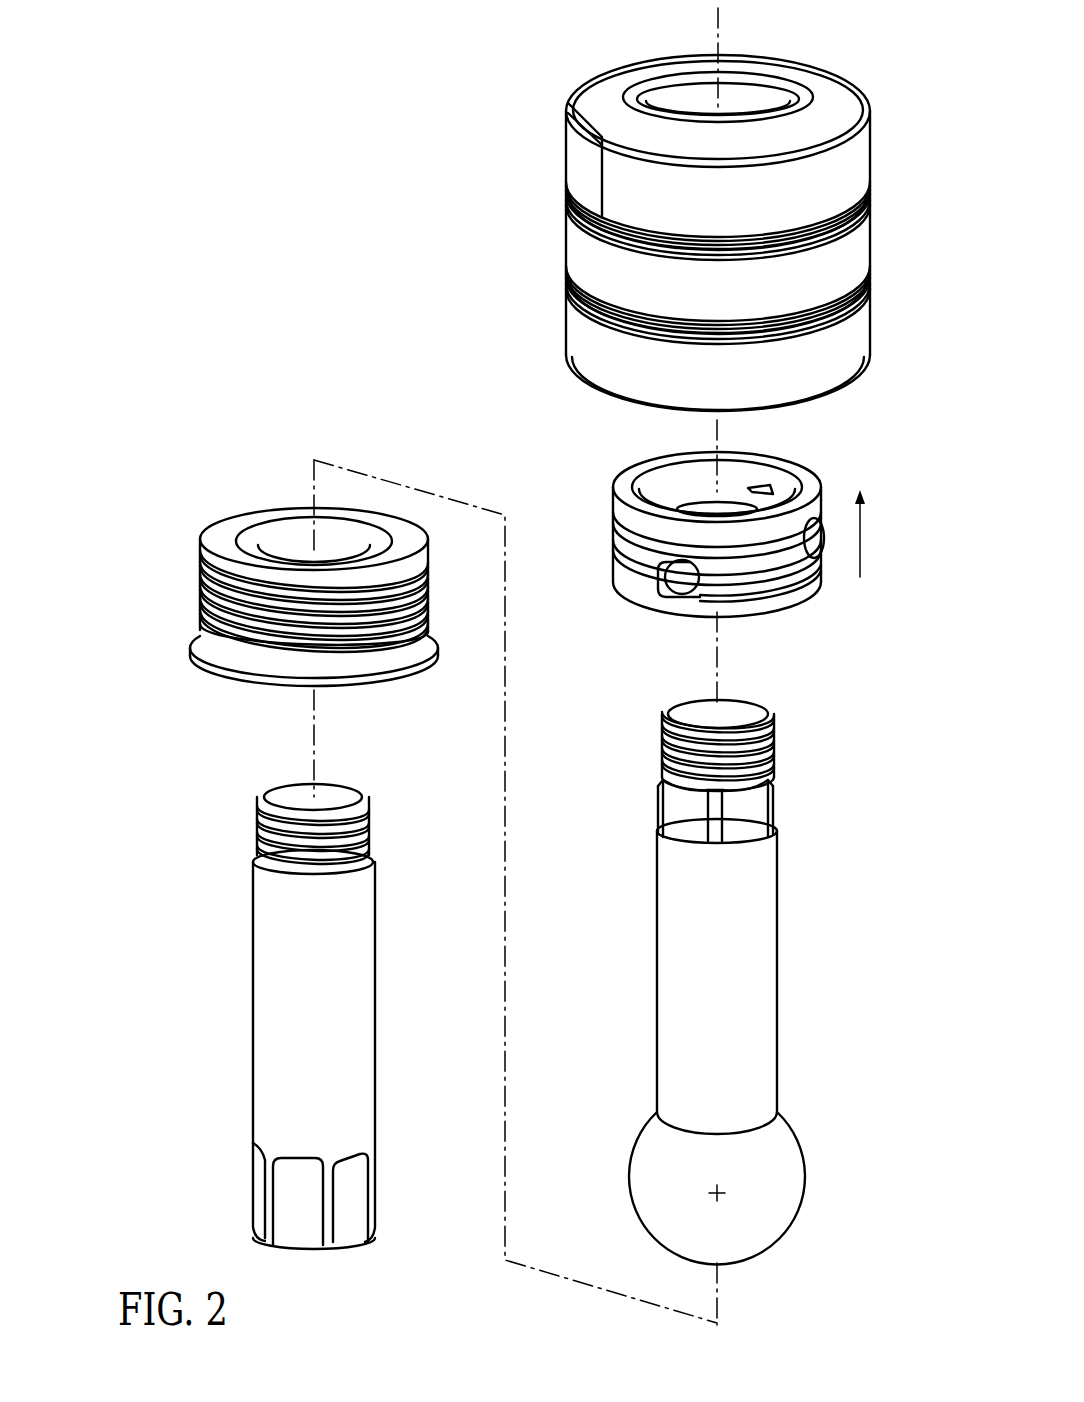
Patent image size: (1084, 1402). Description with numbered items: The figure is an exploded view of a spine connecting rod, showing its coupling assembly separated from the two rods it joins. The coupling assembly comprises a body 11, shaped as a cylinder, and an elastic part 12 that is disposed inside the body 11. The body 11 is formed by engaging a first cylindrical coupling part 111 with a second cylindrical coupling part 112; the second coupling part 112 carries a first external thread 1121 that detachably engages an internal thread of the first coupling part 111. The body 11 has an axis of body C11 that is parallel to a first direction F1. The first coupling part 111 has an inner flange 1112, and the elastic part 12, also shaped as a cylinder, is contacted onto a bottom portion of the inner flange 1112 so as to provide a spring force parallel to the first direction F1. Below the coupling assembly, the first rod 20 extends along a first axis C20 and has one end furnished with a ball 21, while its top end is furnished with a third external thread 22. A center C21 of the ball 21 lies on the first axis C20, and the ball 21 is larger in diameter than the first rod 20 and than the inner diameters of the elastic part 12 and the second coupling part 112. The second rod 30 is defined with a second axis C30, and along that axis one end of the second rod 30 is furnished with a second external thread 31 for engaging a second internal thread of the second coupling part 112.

The body 11 is at (498, 197).
The first cylindrical coupling part 111 is at (675, 216).
The inner flange 1112 is at (650, 100).
The second cylindrical coupling part 112 is at (272, 558).
The first external thread 1121 is at (200, 586).
The elastic part 12 is at (623, 471).
The first rod 20 is at (727, 1012).
The ball 21 is at (790, 1190).
The third external thread 22 is at (660, 745).
The second rod 30 is at (275, 1016).
The second external thread 31 is at (258, 830).
The axis of body C11 is at (718, 26).
The first axis C20 is at (718, 672).
The center of the ball C21 is at (714, 1188).
The second axis C30 is at (314, 757).
The first direction F1 is at (875, 533).